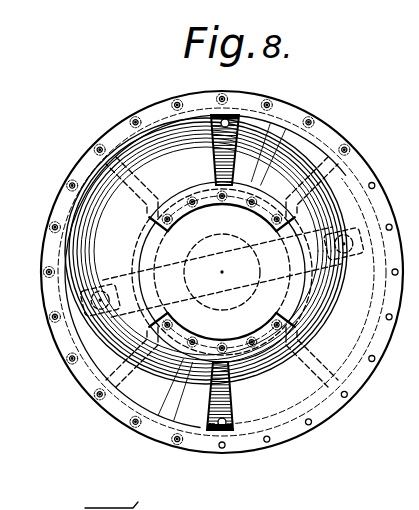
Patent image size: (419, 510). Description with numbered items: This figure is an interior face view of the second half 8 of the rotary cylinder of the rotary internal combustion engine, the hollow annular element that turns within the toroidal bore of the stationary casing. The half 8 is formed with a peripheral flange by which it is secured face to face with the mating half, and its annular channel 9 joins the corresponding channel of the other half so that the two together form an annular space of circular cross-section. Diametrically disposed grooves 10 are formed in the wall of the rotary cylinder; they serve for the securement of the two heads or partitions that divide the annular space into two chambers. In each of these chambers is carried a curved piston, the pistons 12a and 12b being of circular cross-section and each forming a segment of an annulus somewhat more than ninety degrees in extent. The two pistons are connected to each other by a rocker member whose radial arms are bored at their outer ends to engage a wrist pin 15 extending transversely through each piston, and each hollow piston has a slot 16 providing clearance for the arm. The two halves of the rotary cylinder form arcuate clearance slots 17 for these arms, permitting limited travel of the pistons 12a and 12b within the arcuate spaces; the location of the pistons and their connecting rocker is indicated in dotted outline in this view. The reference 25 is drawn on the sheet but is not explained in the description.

The rotary cylinder half 8 is at (121, 401).
The annular channel 9 is at (147, 163).
The groove 10 is at (228, 431).
The curved piston 12a is at (316, 147).
The curved piston 12b is at (15, 400).
The wrist pin 15 is at (346, 231).
The slot 16 is at (257, 247).
The arcuate clearance slot 17 is at (302, 299).
The slot segment 25 is at (235, 118).